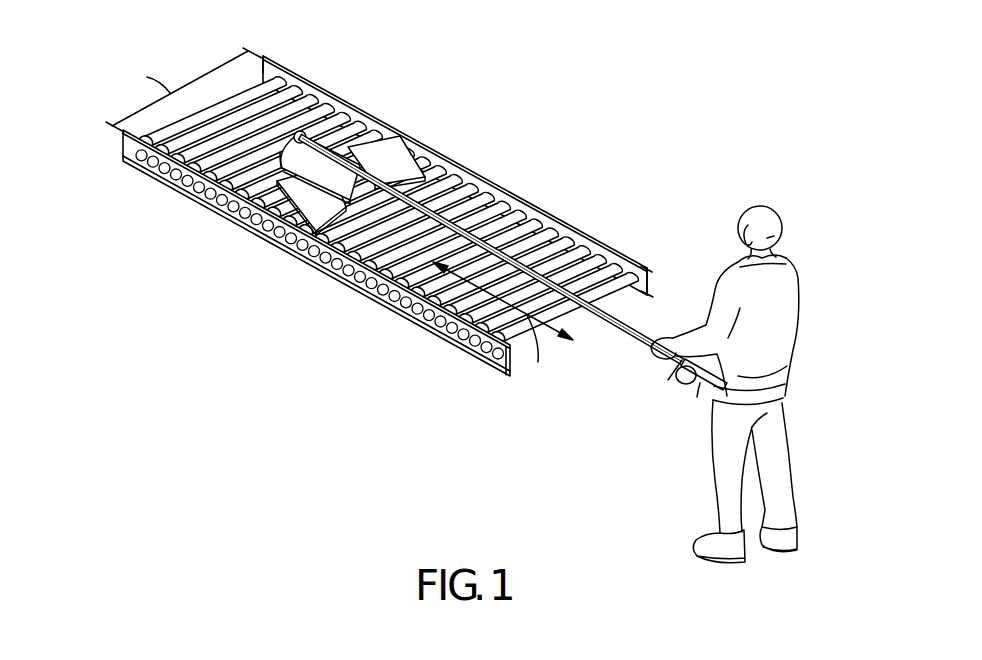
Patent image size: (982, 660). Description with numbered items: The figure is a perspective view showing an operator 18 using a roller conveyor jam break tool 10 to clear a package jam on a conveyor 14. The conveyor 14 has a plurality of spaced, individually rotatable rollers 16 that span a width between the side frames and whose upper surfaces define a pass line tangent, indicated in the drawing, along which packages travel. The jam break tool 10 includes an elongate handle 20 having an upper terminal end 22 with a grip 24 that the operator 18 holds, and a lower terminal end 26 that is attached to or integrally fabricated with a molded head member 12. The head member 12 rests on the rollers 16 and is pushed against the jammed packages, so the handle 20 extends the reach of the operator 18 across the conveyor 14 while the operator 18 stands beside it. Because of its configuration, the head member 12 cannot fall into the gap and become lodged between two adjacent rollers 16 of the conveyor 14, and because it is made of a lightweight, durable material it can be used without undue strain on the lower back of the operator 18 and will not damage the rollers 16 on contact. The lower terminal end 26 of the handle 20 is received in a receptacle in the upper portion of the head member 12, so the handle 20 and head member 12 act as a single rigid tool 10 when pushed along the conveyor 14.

The roller conveyor jam break tool 10 is at (379, 215).
The molded head member 12 is at (272, 183).
The conveyor 14 is at (417, 324).
The rollers 16 is at (320, 104).
The operator 18 is at (795, 268).
The elongate handle 20 is at (503, 260).
The upper terminal end 22 is at (683, 375).
The grip 24 is at (708, 387).
The lower terminal end 26 is at (340, 148).